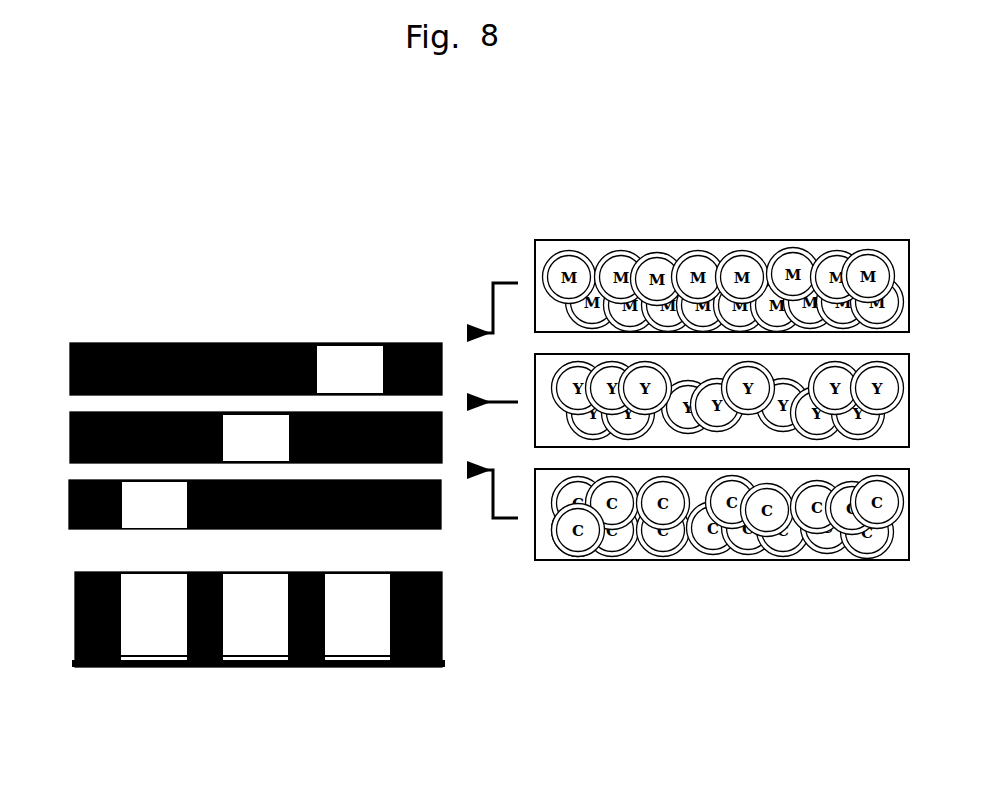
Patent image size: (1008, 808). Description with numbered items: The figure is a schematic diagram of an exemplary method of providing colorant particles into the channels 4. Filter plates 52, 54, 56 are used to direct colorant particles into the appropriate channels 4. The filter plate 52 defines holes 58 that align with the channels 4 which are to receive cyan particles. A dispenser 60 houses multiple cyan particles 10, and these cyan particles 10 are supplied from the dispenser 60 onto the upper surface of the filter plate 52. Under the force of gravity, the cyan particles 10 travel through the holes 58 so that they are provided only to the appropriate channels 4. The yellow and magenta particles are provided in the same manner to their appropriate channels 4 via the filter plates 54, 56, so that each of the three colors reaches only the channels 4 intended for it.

The channels 4 is at (137, 647).
The cyan particles 10 is at (570, 557).
The filter plate 52 is at (227, 521).
The filter plate 54 is at (70, 427).
The filter plate 56 is at (68, 362).
The holes 58 is at (133, 520).
The dispenser 60 is at (633, 561).